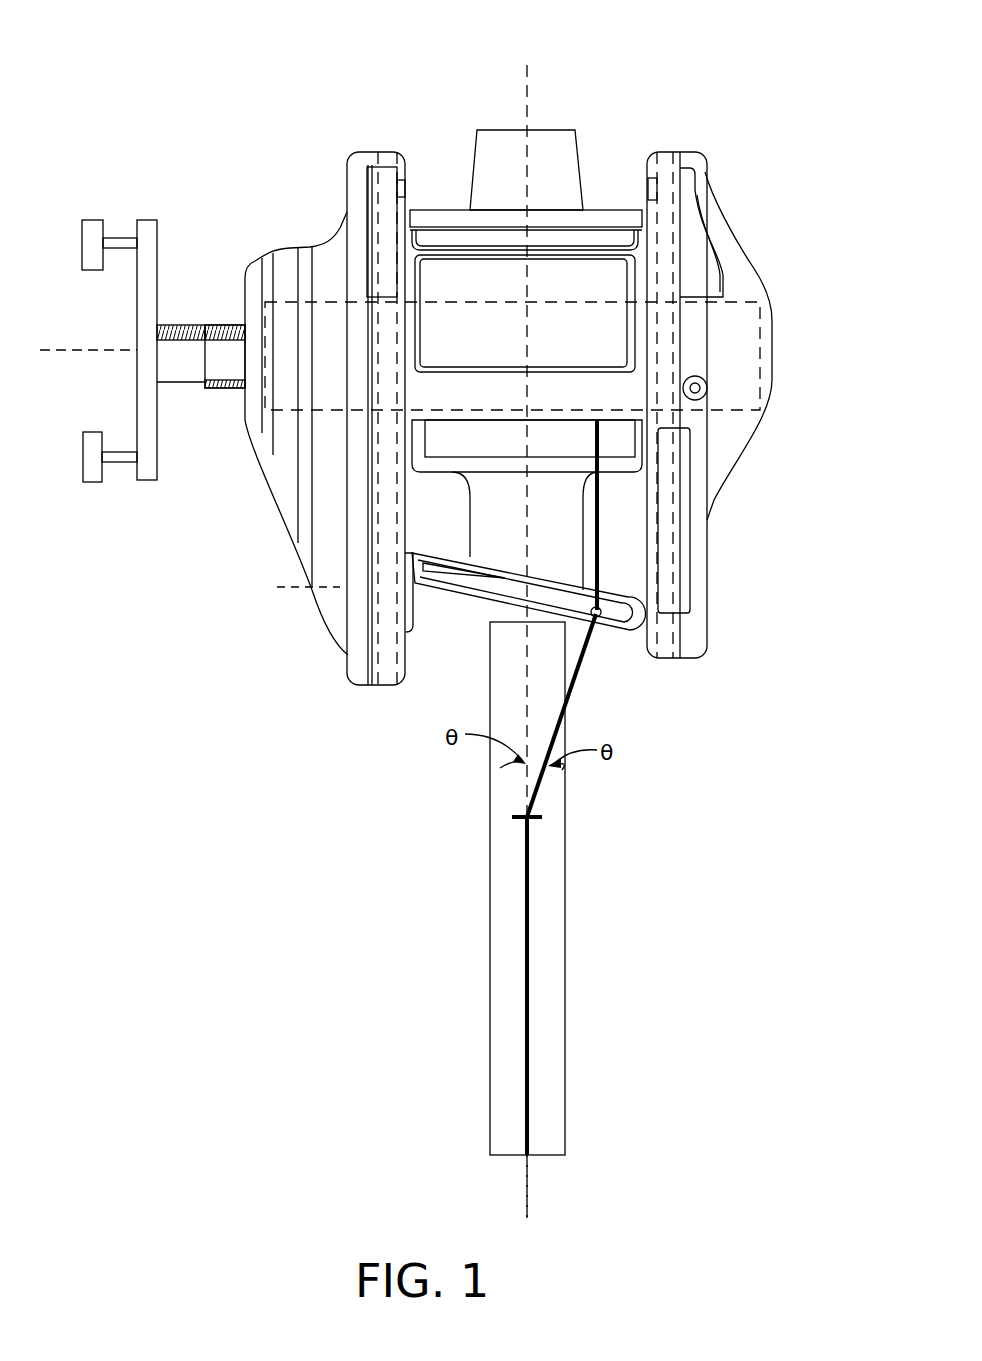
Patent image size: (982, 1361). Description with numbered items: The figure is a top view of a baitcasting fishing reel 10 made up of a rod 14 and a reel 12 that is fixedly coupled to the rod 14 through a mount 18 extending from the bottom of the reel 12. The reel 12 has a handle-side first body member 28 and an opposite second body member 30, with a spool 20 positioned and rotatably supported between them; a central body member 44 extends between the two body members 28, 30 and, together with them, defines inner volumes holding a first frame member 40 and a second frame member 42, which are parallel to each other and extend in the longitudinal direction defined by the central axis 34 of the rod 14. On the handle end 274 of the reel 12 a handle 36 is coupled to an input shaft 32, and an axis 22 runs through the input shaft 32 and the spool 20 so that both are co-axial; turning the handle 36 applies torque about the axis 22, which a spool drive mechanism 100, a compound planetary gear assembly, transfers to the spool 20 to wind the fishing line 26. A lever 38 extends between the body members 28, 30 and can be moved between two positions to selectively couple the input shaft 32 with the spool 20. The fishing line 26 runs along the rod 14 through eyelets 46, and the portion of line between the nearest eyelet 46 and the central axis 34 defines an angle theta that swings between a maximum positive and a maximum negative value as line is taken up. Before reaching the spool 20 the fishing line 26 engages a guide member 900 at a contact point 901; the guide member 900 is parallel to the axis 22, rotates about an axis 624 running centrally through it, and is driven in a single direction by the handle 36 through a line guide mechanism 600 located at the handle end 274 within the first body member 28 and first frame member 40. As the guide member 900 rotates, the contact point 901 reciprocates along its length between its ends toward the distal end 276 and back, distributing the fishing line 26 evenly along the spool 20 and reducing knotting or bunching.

The line guide mechanism 600 is at (248, 110).
The fishing reel 10 is at (116, 180).
The reel 12 is at (732, 114).
The rod 14 is at (567, 940).
The mount 18 is at (560, 152).
The spool 20 is at (462, 250).
The axis 22 is at (76, 351).
The fishing line 26 is at (575, 683).
The first body member 28 is at (290, 490).
The second body member 30 is at (745, 455).
The input shaft 32 is at (232, 393).
The central axis 34 is at (527, 1195).
The handle 36 is at (147, 484).
The lever 38 is at (480, 216).
The first frame member 40 is at (387, 688).
The second frame member 42 is at (675, 638).
The body member 44 is at (406, 656).
The eyelet 46 is at (522, 810).
The spool drive mechanism 100 is at (440, 302).
The handle end 274 is at (230, 230).
The distal end 276 is at (802, 252).
The axis 624 is at (318, 598).
The guide member 900 is at (430, 587).
The contact point 901 is at (600, 620).